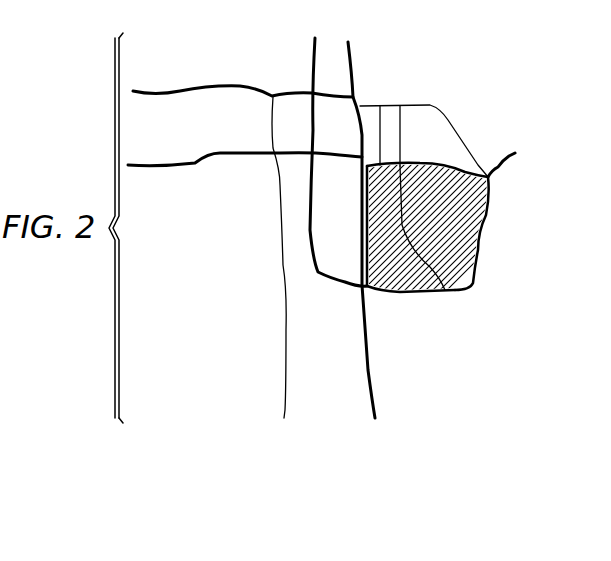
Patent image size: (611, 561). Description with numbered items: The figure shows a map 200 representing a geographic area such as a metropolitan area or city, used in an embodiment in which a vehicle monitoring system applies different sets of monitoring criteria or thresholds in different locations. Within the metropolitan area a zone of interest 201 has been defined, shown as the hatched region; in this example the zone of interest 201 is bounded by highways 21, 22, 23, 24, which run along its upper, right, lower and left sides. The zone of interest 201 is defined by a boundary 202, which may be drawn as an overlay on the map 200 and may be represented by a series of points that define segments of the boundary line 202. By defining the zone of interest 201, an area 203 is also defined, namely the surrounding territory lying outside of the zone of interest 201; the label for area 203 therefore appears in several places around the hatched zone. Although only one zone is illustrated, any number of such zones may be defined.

The map 200 is at (68, 78).
The area 203 is at (451, 82).
The zone of interest 201 is at (456, 224).
The highway 21 is at (420, 163).
The highway 22 is at (489, 214).
The boundary 202 is at (474, 264).
The highway 23 is at (432, 296).
The highway 24 is at (366, 195).